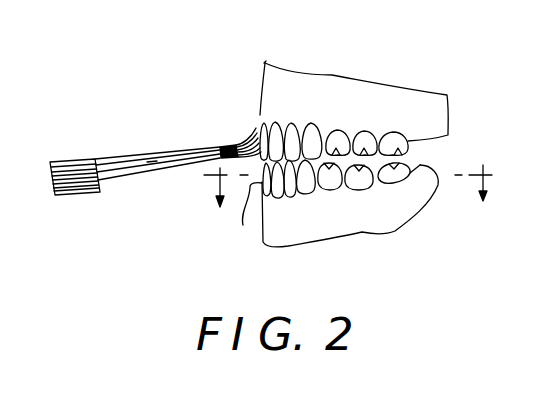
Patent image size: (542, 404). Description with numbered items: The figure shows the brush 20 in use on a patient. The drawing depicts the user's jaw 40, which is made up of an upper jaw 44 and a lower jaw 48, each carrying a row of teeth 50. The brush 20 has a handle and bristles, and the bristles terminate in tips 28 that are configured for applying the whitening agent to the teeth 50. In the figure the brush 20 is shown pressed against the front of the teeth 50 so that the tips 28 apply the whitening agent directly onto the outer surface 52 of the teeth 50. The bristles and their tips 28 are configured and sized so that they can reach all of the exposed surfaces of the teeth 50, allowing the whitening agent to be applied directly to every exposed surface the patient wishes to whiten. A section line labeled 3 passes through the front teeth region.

The brush 20 is at (190, 150).
The tips 28 is at (254, 125).
The jaw 40 is at (266, 55).
The upper jaw 44 is at (373, 98).
The lower jaw 48 is at (286, 238).
The teeth 50 is at (420, 161).
The outer surface 52 is at (239, 217).
The section line 3- 3 is at (348, 186).